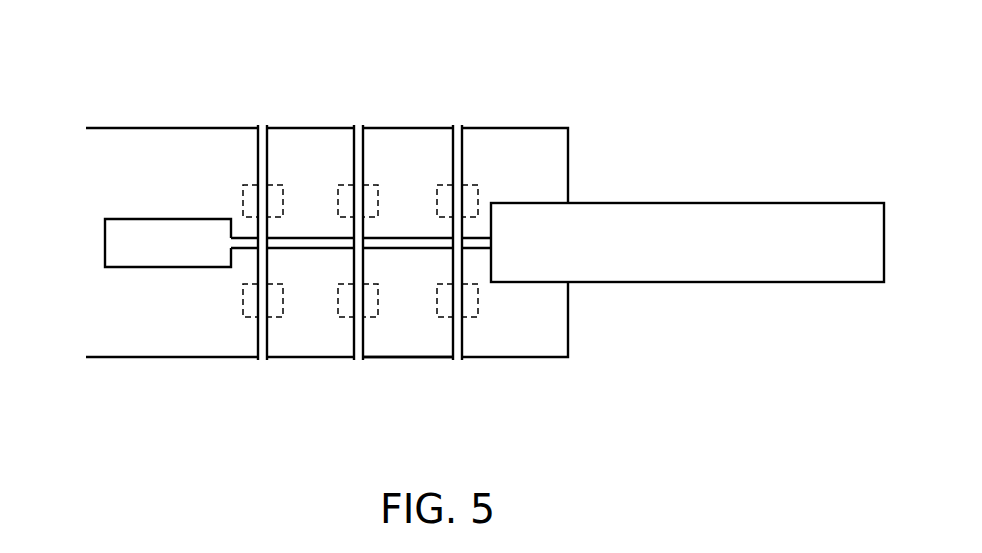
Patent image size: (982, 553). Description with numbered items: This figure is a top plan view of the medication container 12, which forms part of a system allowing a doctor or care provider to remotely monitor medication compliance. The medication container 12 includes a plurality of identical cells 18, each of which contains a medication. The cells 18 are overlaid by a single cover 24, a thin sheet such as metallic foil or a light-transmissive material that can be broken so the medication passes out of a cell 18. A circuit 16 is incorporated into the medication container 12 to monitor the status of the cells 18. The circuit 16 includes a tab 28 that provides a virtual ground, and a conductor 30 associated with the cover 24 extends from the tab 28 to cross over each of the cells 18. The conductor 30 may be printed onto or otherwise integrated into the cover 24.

The medication container 12 is at (297, 183).
The circuit 16 is at (298, 170).
The cell 18 is at (243, 193).
The cover 24 is at (435, 345).
The tab 28 is at (658, 275).
The conductor 30 is at (265, 125).